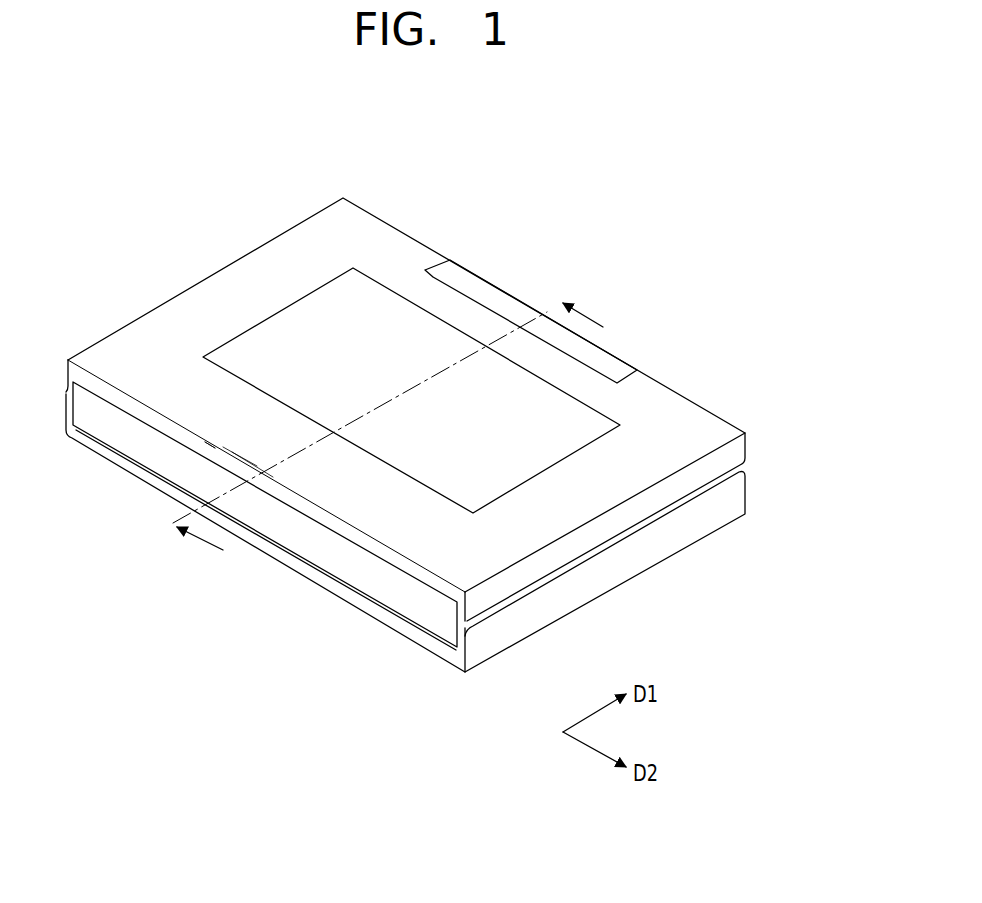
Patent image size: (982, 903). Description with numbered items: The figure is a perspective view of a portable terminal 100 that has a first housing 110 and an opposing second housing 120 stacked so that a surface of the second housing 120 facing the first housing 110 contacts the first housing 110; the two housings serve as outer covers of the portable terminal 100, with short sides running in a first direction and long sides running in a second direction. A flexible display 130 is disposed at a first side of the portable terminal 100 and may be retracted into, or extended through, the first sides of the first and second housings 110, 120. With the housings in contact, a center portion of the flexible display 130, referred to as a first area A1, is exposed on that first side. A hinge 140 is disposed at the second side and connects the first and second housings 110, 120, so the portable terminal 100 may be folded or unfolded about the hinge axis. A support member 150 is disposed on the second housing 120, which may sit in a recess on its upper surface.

The portable terminal 100 is at (480, 221).
The first housing 110 is at (562, 598).
The second housing 120 is at (625, 522).
The flexible display 130 is at (382, 588).
The hinge 140 is at (507, 300).
The support member 150 is at (302, 325).
The first area A1 is at (160, 456).